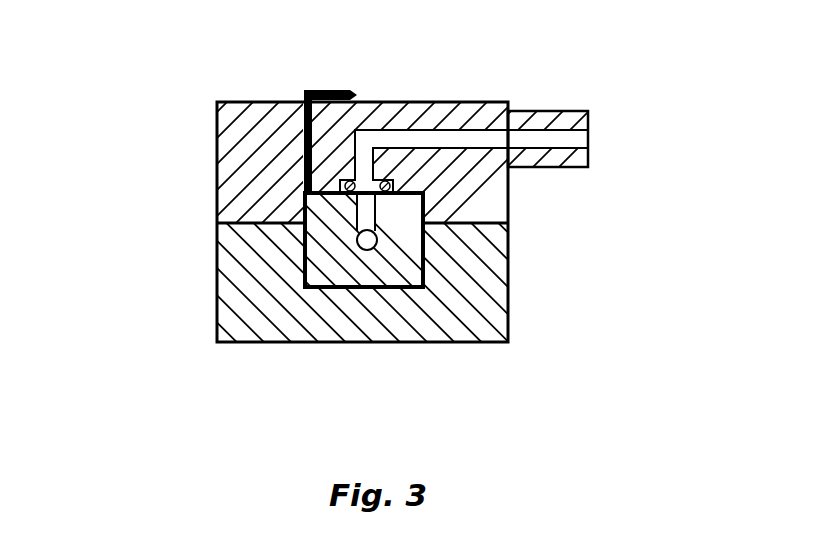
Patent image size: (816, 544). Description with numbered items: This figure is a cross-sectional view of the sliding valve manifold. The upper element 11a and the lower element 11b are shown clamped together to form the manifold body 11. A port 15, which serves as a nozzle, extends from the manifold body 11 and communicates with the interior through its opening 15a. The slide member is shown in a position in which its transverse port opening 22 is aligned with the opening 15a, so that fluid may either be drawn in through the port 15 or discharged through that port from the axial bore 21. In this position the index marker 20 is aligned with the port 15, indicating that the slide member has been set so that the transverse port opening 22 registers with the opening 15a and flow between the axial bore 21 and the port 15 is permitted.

The manifold body 11 is at (331, 208).
The upper element 11a is at (216, 131).
The lower element 11b is at (217, 325).
The port 15 is at (588, 112).
The opening 15a is at (377, 198).
The index marker 20 is at (338, 90).
The axial bore 21 is at (376, 205).
The transverse port opening 22 is at (355, 200).